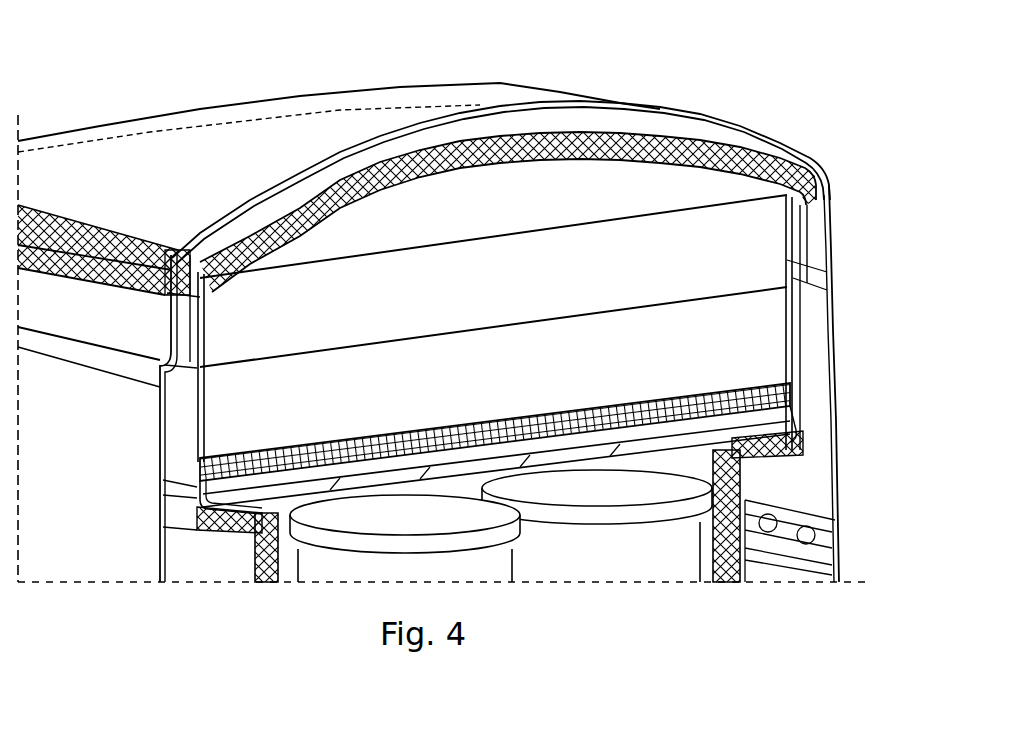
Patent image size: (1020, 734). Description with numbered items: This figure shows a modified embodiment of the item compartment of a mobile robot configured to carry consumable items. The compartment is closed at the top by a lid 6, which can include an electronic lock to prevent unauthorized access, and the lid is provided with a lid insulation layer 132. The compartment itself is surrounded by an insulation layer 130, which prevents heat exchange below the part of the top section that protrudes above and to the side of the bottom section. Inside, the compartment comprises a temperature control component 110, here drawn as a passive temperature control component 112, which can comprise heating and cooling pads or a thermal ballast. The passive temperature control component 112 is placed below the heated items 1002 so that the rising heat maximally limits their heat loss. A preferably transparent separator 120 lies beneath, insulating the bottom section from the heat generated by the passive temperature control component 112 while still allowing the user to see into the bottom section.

The lid 6 is at (503, 82).
The lid insulation layer 132 is at (747, 153).
The heated items 1002 is at (495, 328).
The temperature control component 110 is at (346, 437).
The passive temperature control component 112 is at (790, 397).
The separator 120 is at (621, 460).
The insulation layer 130 is at (200, 530).